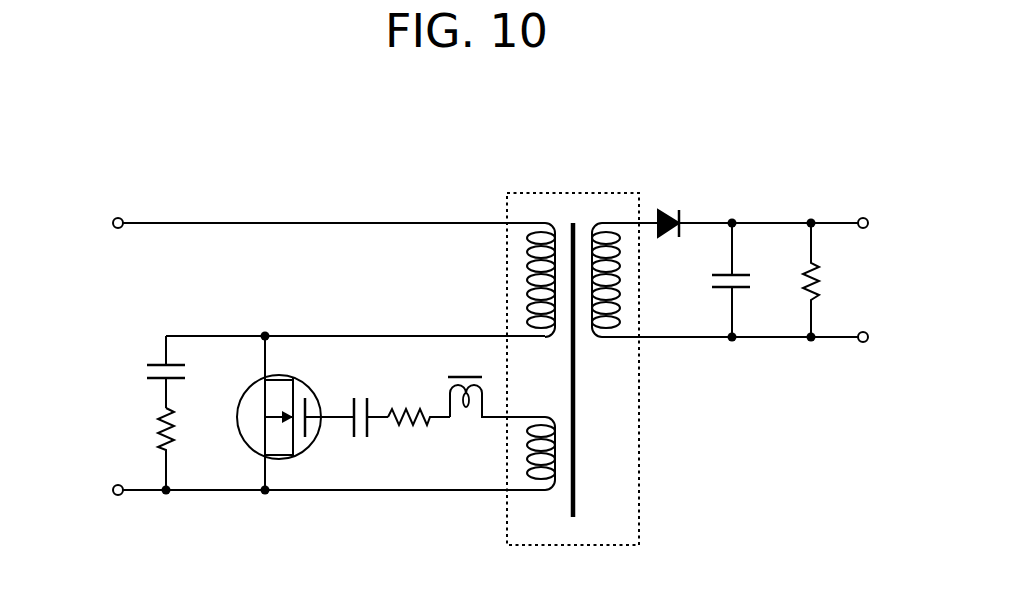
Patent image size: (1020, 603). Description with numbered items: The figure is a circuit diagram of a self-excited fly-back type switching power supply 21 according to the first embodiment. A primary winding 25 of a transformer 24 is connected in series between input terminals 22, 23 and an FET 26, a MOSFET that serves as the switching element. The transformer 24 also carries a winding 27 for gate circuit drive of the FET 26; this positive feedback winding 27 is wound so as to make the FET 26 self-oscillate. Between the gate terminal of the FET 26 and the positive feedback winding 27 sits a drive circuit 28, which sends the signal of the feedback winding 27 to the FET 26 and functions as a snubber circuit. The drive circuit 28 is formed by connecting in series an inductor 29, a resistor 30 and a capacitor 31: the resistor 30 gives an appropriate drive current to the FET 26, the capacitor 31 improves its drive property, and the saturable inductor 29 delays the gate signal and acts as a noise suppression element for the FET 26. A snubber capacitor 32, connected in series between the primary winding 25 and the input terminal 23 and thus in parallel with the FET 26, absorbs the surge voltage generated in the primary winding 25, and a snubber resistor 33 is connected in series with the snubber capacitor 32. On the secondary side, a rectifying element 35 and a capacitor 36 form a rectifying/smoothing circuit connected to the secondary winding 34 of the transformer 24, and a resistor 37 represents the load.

The switching power supply 21 is at (304, 148).
The input terminal 22 is at (115, 218).
The input terminal 23 is at (115, 485).
The transformer 24 is at (572, 343).
The primary winding 25 is at (527, 282).
The FET 26 is at (243, 400).
The positive feedback winding 27 is at (555, 452).
The drive circuit 28 is at (442, 475).
The inductor 29 is at (466, 408).
The resistor 30 is at (410, 427).
The capacitor 31 is at (356, 437).
The snubber capacitor 32 is at (150, 363).
The snubber resistor 33 is at (158, 426).
The secondary winding 34 is at (620, 282).
The rectifying element 35 is at (664, 210).
The capacitor 36 is at (750, 274).
The resistor 37 is at (820, 283).